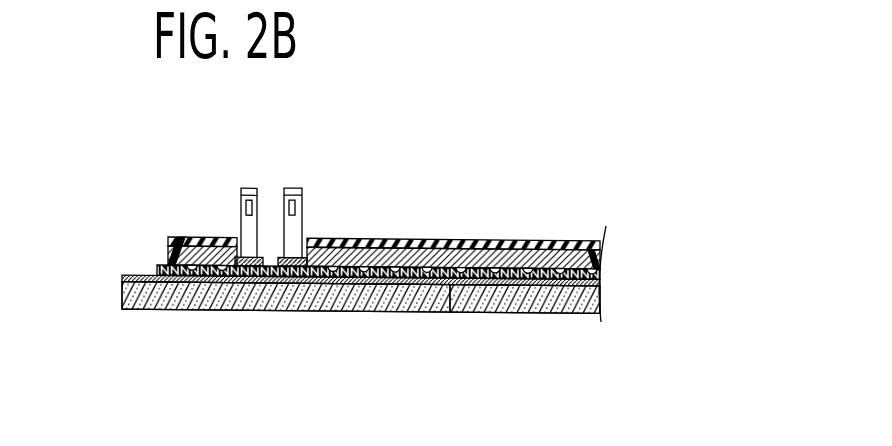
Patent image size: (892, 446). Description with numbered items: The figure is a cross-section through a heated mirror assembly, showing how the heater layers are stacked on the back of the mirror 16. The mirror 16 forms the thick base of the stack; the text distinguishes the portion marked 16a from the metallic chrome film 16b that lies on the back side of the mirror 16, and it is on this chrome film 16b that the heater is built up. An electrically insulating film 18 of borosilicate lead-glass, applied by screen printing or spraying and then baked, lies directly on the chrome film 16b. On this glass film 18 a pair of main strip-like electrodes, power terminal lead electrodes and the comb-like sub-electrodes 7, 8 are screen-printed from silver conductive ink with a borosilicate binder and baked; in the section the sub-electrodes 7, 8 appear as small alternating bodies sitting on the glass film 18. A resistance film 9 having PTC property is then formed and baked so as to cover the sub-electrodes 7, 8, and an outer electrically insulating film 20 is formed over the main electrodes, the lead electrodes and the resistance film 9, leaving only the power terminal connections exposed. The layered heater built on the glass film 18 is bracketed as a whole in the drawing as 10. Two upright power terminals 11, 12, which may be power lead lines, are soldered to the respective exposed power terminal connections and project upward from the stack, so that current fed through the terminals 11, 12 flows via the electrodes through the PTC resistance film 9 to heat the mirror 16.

The comb-like sub-electrode 7 is at (335, 242).
The comb-like sub-electrode 8 is at (368, 242).
The resistance film 9 is at (208, 238).
The semiconductor module 10 is at (598, 241).
The power terminal 11 is at (250, 186).
The power terminal 12 is at (298, 186).
The mirror 16 is at (479, 379).
The first substrate portion 16a is at (412, 303).
The metallic chrome film 16b is at (447, 300).
The electrically insulating film 18 is at (158, 270).
The electrically insulating film 20 is at (168, 241).